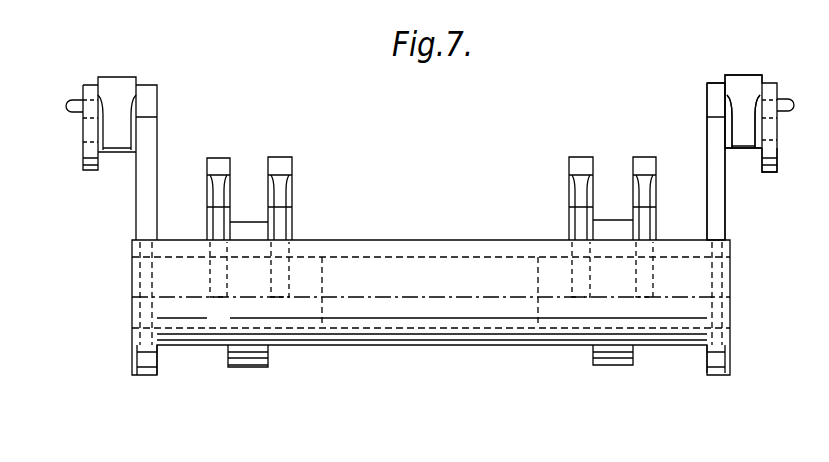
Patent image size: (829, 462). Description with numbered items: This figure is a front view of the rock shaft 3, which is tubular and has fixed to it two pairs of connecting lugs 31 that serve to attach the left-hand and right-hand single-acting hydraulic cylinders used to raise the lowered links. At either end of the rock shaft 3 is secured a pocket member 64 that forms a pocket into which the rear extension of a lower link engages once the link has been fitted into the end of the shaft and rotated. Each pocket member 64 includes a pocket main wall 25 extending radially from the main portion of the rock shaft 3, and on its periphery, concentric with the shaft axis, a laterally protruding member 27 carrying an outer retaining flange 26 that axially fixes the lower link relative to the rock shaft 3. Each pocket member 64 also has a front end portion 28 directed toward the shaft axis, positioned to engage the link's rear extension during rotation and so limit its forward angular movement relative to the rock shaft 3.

The rock shaft 3 is at (530, 350).
The pocket main wall 25 is at (715, 213).
The outer retaining flange 26 is at (770, 175).
The laterally protruding member 27 is at (748, 80).
The front end portion 28 is at (742, 133).
The connecting lugs 31 is at (645, 160).
The pocket members 64 is at (165, 89).